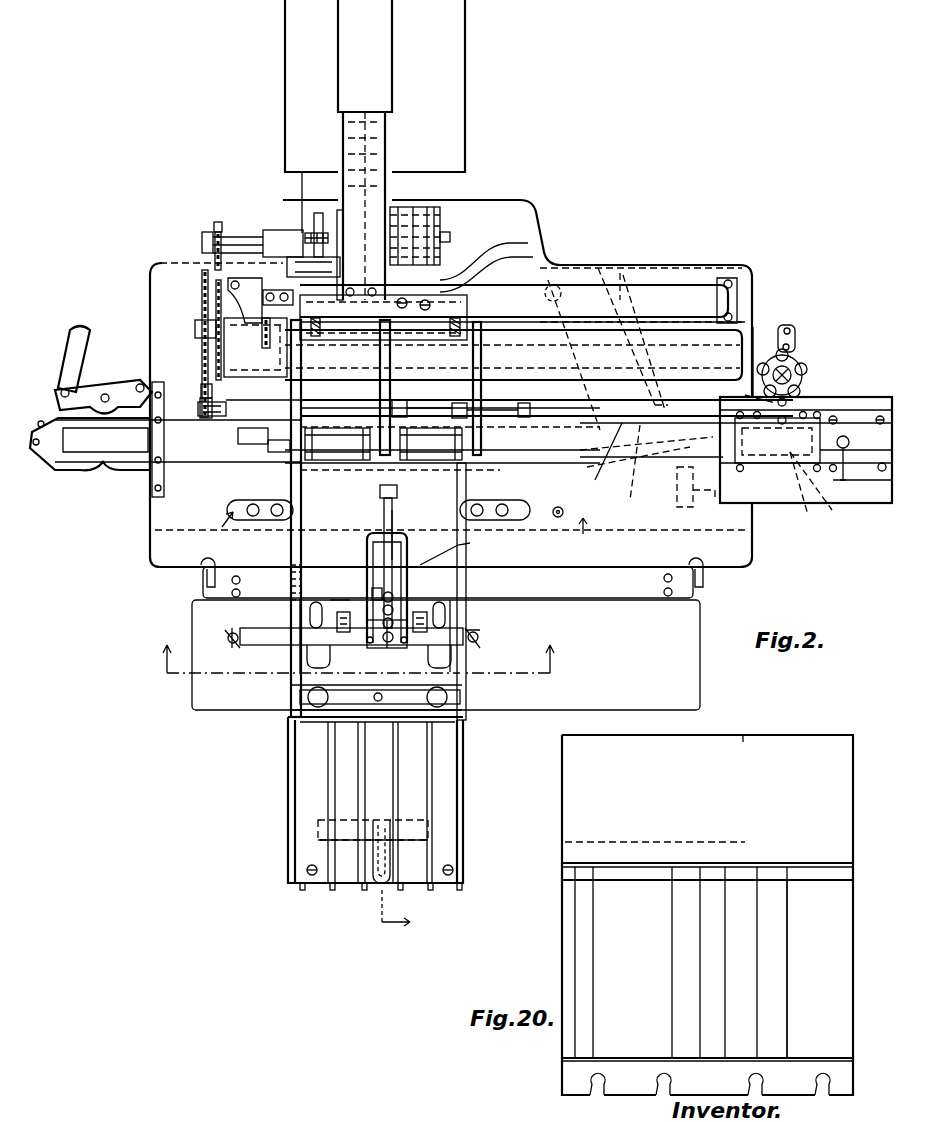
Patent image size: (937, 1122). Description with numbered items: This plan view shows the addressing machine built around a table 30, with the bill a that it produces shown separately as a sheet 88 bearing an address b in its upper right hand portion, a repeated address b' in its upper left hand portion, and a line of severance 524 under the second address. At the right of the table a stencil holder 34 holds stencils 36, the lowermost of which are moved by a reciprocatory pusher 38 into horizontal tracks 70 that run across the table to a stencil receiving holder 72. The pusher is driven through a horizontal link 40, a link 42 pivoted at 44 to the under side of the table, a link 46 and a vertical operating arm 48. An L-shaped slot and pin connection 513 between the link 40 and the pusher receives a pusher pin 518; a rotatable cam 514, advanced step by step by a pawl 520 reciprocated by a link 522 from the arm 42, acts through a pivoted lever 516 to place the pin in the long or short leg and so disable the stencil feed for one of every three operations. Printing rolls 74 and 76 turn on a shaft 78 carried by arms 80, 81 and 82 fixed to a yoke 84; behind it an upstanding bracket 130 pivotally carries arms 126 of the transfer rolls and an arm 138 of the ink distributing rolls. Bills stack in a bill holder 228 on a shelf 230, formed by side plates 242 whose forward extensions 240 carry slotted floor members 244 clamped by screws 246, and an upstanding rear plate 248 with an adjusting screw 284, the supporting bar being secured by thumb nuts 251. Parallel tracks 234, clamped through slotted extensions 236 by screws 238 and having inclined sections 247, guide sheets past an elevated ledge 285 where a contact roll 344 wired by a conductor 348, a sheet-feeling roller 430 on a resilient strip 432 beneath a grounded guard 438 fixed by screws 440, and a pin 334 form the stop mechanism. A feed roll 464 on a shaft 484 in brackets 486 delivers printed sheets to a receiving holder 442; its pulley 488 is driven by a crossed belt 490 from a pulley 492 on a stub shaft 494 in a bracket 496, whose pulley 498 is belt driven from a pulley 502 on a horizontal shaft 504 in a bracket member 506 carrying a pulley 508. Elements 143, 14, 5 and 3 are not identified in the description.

In FIG. 2, the receiving holder 442 is at (445, 60).
In FIG. 2, the table 30 is at (688, 275).
In FIG. 2, the yoke 84 is at (513, 355).
In FIG. 2, the link 42 is at (522, 343).
In FIG. 2, the upstanding bracket 130 is at (466, 300).
In FIG. 2, the arm 138 is at (460, 326).
In FIG. 2, the arms 126 is at (303, 357).
In FIG. 2, the forwardly extending arm 80 is at (482, 405).
In FIG. 2, the forwardly extending arm 81 is at (378, 388).
In FIG. 2, the forwardly extending arm 82 is at (290, 393).
In FIG. 2, the power driven feed roll 464 is at (458, 398).
In FIG. 2, the brackets 486 is at (532, 410).
In FIG. 2, the shaft 484 is at (500, 417).
In FIG. 2, the printing roll 76 is at (345, 461).
In FIG. 2, the printing roll 74 is at (440, 461).
In FIG. 2, the shaft 78 is at (284, 452).
In FIG. 2, the pulley 492 is at (201, 300).
In FIG. 2, the stub shaft 494 is at (195, 327).
In FIG. 2, the pulley 498 is at (215, 345).
In FIG. 2, the bracket 496 is at (248, 335).
In FIG. 2, the pin 143 is at (268, 350).
In FIG. 2, the crossed belt 490 is at (200, 392).
In FIG. 2, the pulley 488 is at (199, 405).
In FIG. 2, the pulley 502 is at (221, 224).
In FIG. 2, the horizontal shaft 504 is at (245, 237).
In FIG. 2, the bracket member 506 is at (296, 235).
In FIG. 2, the pulley 508 is at (321, 213).
In FIG. 2, the pivot 44 is at (560, 275).
In FIG. 2, the stencil receiving holder 72 is at (105, 455).
In FIG. 2, the outwardly projecting extensions 236 is at (227, 503).
In FIG. 2, the clamping screws 238 is at (250, 540).
In FIG. 2, the tracks 234 is at (292, 547).
In FIG. 2, the section line 14 is at (403, 525).
In FIG. 2, the sheet-feeling roller 430 is at (383, 517).
In FIG. 2, the resilient metal strip 432 is at (394, 520).
In FIG. 2, the wire band or guard 438 is at (407, 548).
In FIG. 2, the pin 334 is at (400, 615).
In FIG. 2, the contact or sheet-feeling roll 344 is at (372, 590).
In FIG. 2, the electrical conductor 348 is at (472, 553).
In FIG. 2, the upwardly inclined section 247 is at (291, 582).
In FIG. 2, the elevated ledge 285 is at (340, 599).
In FIG. 2, the horizontal shelf 230 is at (700, 690).
In FIG. 2, the screws 440 is at (463, 628).
In FIG. 2, the thumb nuts 251 is at (230, 633).
In FIG. 2, the forward extensions 240 is at (291, 612).
In FIG. 2, the adjusting screw 284 is at (372, 645).
In FIG. 2, the upstanding rear plate 248 is at (418, 662).
In FIG. 2, the section line 5 is at (356, 647).
In FIG. 2, the upwardly extending plates 242 is at (291, 690).
In FIG. 2, the floor members 244 is at (333, 705).
In FIG. 2, the clamping screws 246 is at (310, 704).
In FIG. 2, the bill holder 228 is at (292, 812).
In FIG. 2, the section line 3 is at (403, 910).
In FIG. 2, the stencil holder 34 is at (812, 412).
In FIG. 2, the reciprocatory pusher 38 is at (845, 436).
In FIG. 2, the stencils 36 is at (767, 458).
In FIG. 2, the rotatable cam 514 is at (798, 360).
In FIG. 2, the pawl 520 is at (782, 325).
In FIG. 2, the link 522 is at (755, 320).
In FIG. 2, the pivoted lever 516 is at (745, 395).
In FIG. 2, the L-shaped slot and pin connection 513 is at (804, 489).
In FIG. 2, the pusher pin 518 is at (824, 490).
In FIG. 2, the horizontal tracks 70 is at (601, 457).
In FIG. 2, the horizontal link 40 is at (660, 470).
In FIG. 2, the link 46 is at (631, 472).
In FIG. 2, the operating arm 48 is at (700, 505).
In FIG. 20, the sheet 88 is at (855, 745).
In FIG. 20, the address b is at (776, 764).
In FIG. 20, the repeated address b' is at (643, 765).
In FIG. 20, the line of severance 524 is at (585, 845).
In FIG. 20, the bill a is at (840, 940).